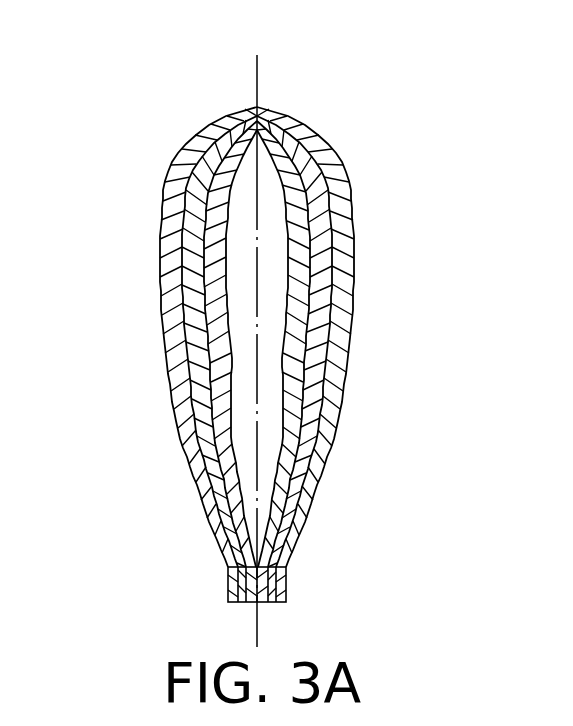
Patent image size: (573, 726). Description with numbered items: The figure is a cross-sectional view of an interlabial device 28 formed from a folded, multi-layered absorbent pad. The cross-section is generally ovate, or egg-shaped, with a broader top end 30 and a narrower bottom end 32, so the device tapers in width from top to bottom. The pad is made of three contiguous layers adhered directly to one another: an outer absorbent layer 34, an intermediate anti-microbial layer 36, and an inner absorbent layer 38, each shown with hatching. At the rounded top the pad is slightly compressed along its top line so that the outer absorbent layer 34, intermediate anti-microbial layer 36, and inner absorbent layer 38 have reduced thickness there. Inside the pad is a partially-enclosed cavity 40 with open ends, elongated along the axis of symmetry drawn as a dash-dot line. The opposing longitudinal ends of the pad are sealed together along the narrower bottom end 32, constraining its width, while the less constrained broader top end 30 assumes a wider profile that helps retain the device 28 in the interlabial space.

The interlabial device 28 is at (122, 168).
The broader top end 30 is at (223, 103).
The narrower bottom end 32 is at (223, 582).
The outer absorbent layer 34 is at (175, 218).
The intermediate anti-microbial layer 36 is at (193, 261).
The inner absorbent layer 38 is at (213, 326).
The cavity 40 is at (241, 378).